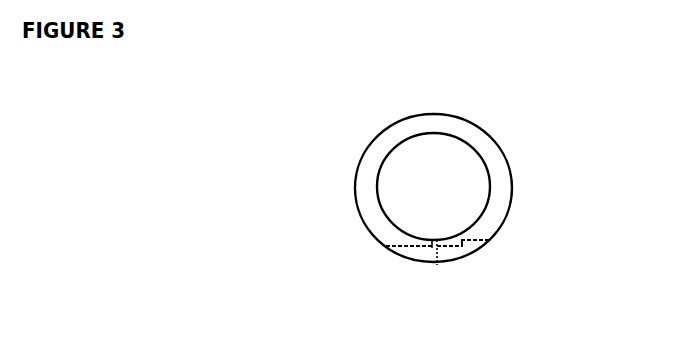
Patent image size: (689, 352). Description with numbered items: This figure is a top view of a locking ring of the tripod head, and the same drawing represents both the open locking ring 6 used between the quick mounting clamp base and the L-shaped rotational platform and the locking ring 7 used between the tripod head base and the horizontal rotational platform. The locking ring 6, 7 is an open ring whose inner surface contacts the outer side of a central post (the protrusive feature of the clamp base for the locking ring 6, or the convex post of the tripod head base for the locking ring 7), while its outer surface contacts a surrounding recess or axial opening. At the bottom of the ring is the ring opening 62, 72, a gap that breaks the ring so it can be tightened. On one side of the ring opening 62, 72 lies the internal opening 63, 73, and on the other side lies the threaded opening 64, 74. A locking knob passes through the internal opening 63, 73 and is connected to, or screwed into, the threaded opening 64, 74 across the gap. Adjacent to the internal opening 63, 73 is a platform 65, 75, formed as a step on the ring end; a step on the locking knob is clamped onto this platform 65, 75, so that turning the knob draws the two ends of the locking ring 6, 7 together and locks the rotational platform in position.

The locking ring 6 is at (383, 188).
The locking ring 7 is at (293, 192).
The ring opening 62 is at (438, 276).
The ring opening 72 is at (433, 243).
The internal opening 63 is at (501, 276).
The internal opening 73 is at (465, 268).
The threaded opening 64 is at (377, 279).
The threaded opening 74 is at (420, 252).
The platform 65 is at (513, 259).
The platform 75 is at (465, 251).